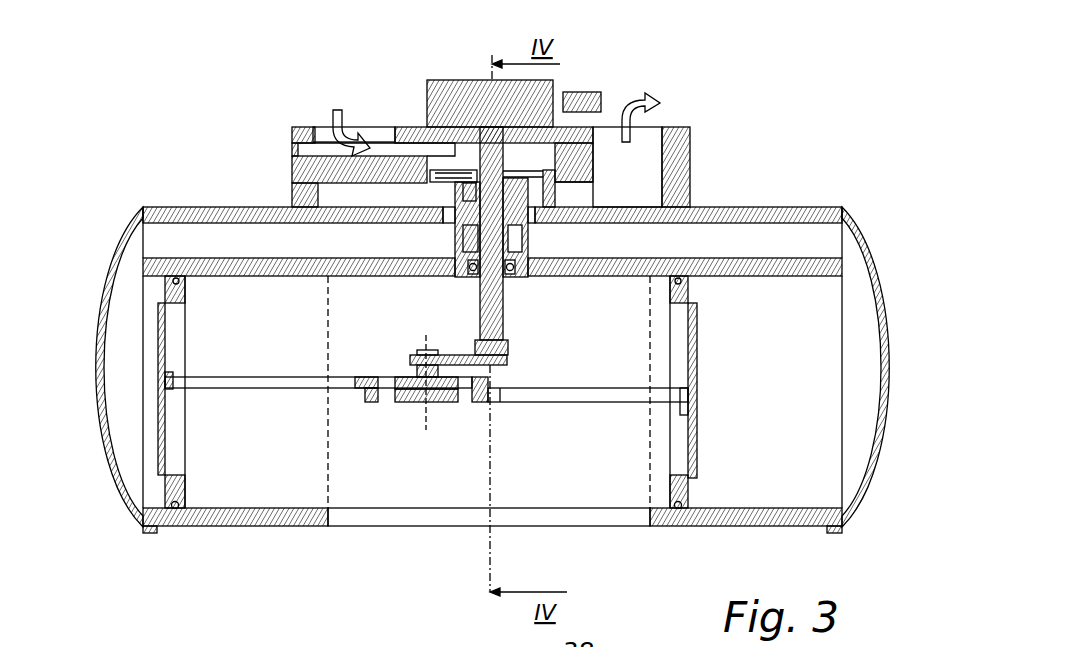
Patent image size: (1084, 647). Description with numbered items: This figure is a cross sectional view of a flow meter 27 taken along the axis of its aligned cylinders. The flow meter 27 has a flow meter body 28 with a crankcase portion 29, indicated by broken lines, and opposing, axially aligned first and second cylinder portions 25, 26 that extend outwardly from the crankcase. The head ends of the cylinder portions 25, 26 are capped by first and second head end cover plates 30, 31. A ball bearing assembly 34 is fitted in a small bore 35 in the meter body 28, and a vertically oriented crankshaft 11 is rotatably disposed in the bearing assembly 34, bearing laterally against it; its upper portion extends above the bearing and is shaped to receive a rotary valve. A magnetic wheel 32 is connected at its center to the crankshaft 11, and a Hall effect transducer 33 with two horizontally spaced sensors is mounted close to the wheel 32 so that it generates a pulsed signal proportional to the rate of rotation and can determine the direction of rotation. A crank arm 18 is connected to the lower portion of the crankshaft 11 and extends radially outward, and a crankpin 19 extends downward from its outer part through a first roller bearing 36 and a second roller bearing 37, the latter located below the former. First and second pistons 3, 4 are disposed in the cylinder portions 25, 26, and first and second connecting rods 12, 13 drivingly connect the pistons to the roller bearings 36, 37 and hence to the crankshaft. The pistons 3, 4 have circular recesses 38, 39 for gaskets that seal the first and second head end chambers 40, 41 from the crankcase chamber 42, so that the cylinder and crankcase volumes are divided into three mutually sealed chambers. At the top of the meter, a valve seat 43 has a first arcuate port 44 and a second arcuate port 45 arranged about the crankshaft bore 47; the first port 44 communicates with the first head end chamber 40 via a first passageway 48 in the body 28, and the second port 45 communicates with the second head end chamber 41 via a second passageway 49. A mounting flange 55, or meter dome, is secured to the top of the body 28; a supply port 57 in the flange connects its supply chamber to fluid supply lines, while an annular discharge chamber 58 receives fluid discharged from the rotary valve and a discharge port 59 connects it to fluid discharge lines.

The first piston 3 is at (158, 345).
The second piston 4 is at (697, 357).
The crankshaft 11 is at (503, 322).
The first connecting rod 12 is at (258, 377).
The second connecting rod 13 is at (592, 387).
The crank arm 18 is at (463, 353).
The crankpin 19 is at (420, 352).
The first cylinder portion 25 is at (215, 307).
The second cylinder portion 26 is at (812, 295).
The flow meter 27 is at (752, 117).
The flow meter body 28 is at (250, 527).
The crankcase portion 29 is at (410, 478).
The first head end cover plate 30 is at (99, 450).
The second head end cover plate 31 is at (888, 313).
The magnetic wheel 32 is at (553, 78).
The Hall effect transducer 33 is at (590, 97).
The ball bearing assembly 34 is at (507, 278).
The small bore 35 is at (470, 262).
The first roller bearing 36 is at (405, 380).
The second roller bearing 37 is at (413, 400).
The circular recess 38 is at (176, 527).
The circular recess 39 is at (678, 508).
The first head end chamber 40 is at (125, 392).
The second head end chamber 41 is at (746, 401).
The crankcase chamber 42 is at (489, 392).
The valve seat 43 is at (375, 206).
The first arcuate port 44 is at (443, 215).
The second arcuate port 45 is at (540, 214).
The crankshaft bore 47 is at (508, 212).
The first passageway 48 is at (299, 251).
The second passageway 49 is at (685, 251).
The mounting flange 55 is at (292, 165).
The supply port 57 is at (323, 128).
The annular discharge chamber 58 is at (608, 167).
The discharge port 59 is at (660, 126).